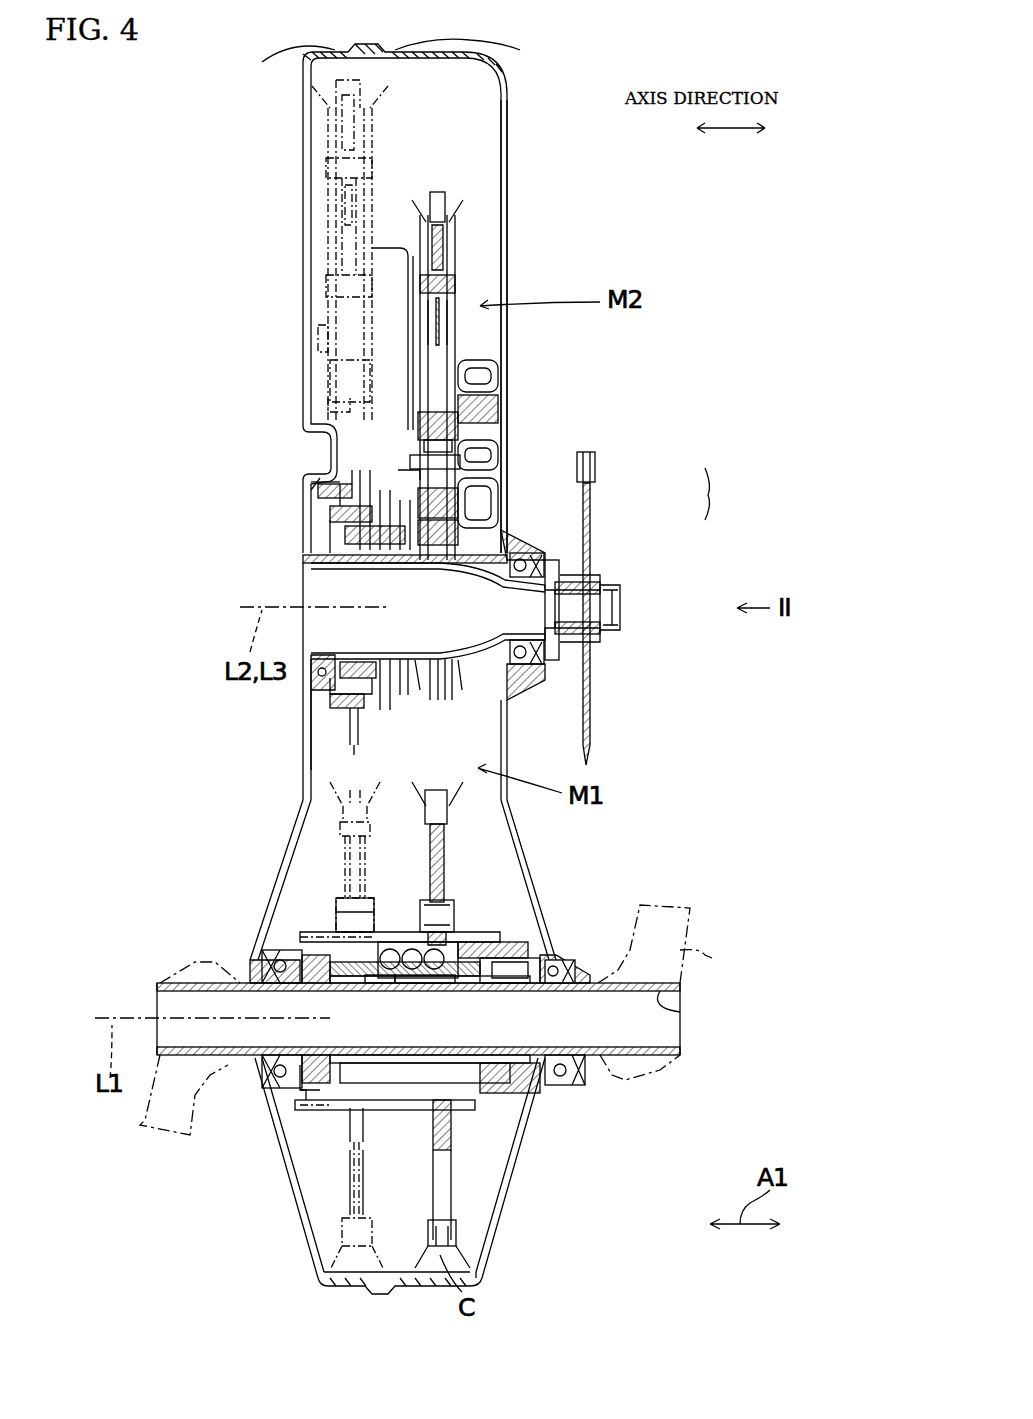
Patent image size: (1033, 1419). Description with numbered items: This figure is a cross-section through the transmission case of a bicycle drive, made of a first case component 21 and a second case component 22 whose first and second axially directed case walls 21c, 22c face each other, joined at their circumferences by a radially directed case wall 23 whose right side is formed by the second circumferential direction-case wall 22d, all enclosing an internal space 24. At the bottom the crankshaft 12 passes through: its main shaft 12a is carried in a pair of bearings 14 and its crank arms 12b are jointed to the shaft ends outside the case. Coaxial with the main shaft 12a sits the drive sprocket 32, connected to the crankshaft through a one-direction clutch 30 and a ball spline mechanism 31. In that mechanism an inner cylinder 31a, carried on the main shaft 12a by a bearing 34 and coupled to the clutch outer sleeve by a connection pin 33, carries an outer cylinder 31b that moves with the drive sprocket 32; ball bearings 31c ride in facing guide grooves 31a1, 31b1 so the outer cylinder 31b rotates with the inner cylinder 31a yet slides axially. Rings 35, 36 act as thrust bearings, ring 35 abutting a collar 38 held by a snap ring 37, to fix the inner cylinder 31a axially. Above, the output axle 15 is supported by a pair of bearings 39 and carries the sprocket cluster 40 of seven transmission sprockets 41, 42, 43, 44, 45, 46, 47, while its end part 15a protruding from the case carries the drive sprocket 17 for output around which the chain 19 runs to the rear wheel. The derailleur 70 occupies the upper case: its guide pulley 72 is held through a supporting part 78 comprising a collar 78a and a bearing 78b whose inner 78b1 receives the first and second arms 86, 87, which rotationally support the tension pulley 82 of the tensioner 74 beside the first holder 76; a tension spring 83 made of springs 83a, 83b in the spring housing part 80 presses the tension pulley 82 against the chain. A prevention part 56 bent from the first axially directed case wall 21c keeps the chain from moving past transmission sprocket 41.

The crankshaft 12 is at (204, 930).
The main shaft 12a is at (690, 1012).
The crank arms 12b is at (712, 958).
The bearings 14 is at (262, 955).
The output axle 15 is at (365, 657).
The end part 15a is at (600, 582).
The drive sprocket 17 is at (592, 678).
The chain 19 is at (596, 470).
The first case component 21 is at (290, 1182).
The first axially directed case wall 21c is at (303, 247).
The second case component 22 is at (540, 1200).
The second axially directed case wall 22c is at (509, 268).
The second circumferential direction-case wall 22d is at (520, 52).
The radially directed case wall 23 is at (262, 62).
The internal space 24 is at (480, 148).
The one-direction clutch 30 is at (560, 1040).
The ball spline mechanism 31 is at (292, 990).
The inner cylinder 31a is at (430, 982).
The guide grooves 31a1 is at (380, 982).
The outer cylinder 31b is at (470, 930).
The guide grooves 31b1 is at (432, 940).
The ball bearings 31c is at (392, 935).
The drive sprocket 32 is at (350, 870).
The connection pin 33 is at (475, 1080).
The bearing 34 is at (392, 1070).
The ring 35 is at (330, 982).
The ring 36 is at (500, 985).
The snap ring 37 is at (299, 991).
The collar 38 is at (314, 1090).
The bearings 39 is at (305, 684).
The sprocket cluster 40 is at (383, 779).
The transmission sprocket 41 is at (308, 755).
The transmission sprocket 42 is at (358, 742).
The transmission sprocket 43 is at (380, 725).
The transmission sprocket 44 is at (392, 708).
The transmission sprocket 45 is at (410, 690).
The transmission sprocket 46 is at (433, 659).
The transmission sprocket 47 is at (452, 662).
The prevention part 56 is at (330, 462).
The derailleur 70 is at (387, 396).
The guide pulley 72 is at (480, 380).
The tensioner 74 is at (480, 224).
The first holder 76 is at (318, 478).
The supporting part 78 is at (364, 511).
The collar 78a is at (490, 448).
The bearing 78b is at (480, 406).
The inner 78b1 is at (485, 431).
The spring housing part 80 is at (475, 418).
The tension pulley 82 is at (452, 250).
The tension spring 83 is at (730, 494).
The spring 83a is at (508, 508).
The spring 83b is at (508, 485).
The first arm 86 is at (425, 360).
The second arm 87 is at (455, 362).